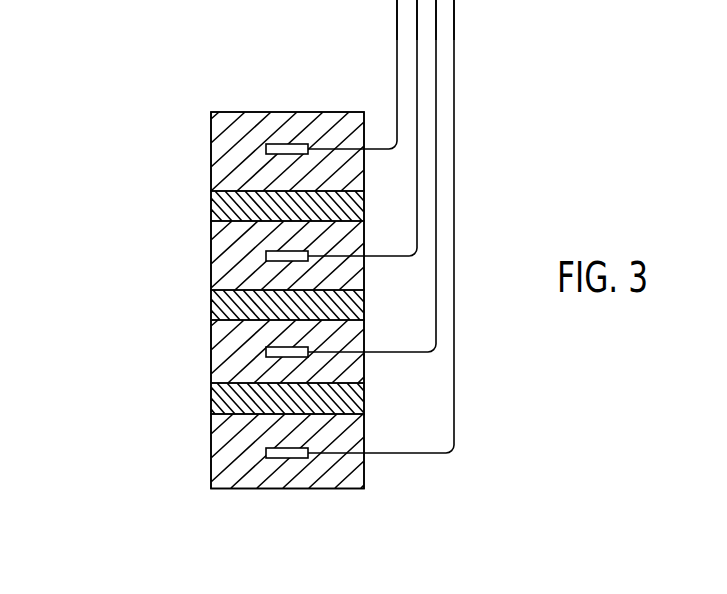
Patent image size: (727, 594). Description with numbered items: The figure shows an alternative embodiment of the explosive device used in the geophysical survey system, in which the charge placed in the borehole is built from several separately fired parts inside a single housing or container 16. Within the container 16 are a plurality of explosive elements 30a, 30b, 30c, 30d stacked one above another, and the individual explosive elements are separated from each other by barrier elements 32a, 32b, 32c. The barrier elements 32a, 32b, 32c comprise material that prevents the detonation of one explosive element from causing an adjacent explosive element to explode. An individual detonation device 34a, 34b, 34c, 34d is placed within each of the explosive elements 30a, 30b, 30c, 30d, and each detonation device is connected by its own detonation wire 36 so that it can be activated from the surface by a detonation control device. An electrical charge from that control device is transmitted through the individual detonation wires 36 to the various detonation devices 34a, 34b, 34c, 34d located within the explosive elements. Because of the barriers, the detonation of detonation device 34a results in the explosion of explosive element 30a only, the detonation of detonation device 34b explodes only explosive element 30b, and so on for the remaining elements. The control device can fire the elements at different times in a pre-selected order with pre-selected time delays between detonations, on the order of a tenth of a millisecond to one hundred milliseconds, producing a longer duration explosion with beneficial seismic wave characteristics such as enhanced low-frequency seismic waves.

The container 16 is at (363, 467).
The explosive element 30a is at (203, 157).
The explosive element 30b is at (202, 262).
The explosive element 30c is at (202, 356).
The explosive element 30d is at (202, 452).
The barrier element 32a is at (203, 208).
The barrier element 32b is at (202, 310).
The barrier element 32c is at (202, 404).
The detonation device 34a is at (282, 149).
The detonation device 34b is at (278, 256).
The detonation device 34c is at (279, 355).
The detonation device 34d is at (285, 458).
The detonation wires 36 is at (397, 31).